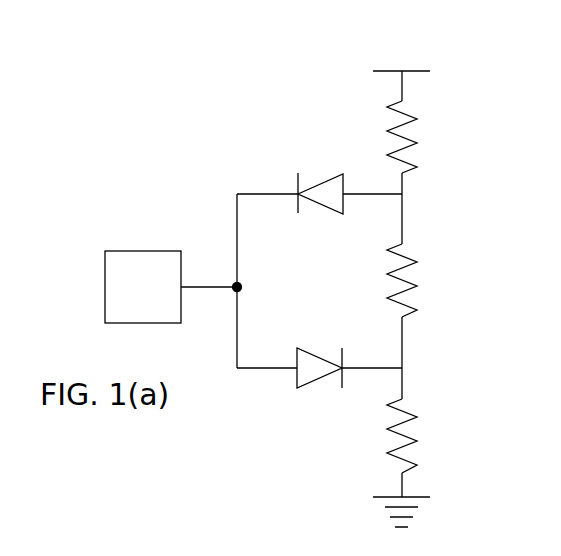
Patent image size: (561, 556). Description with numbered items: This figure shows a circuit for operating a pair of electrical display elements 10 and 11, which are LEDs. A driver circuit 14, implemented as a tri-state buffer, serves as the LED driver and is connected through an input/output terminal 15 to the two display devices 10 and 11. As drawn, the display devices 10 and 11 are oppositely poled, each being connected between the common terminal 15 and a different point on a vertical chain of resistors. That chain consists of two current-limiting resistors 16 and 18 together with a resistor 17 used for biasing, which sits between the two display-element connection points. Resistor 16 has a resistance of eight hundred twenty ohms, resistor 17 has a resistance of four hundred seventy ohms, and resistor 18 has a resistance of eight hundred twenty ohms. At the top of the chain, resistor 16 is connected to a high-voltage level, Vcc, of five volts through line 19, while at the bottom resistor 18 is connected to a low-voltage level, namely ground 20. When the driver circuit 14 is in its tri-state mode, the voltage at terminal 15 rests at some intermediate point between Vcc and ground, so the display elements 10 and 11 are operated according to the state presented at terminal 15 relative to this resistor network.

The electrical display element 10 is at (320, 175).
The electrical display element 11 is at (318, 350).
The driver circuit 14 is at (140, 247).
The input/output terminal 15 is at (234, 278).
The current-limiting resistor 16 is at (418, 140).
The biasing resistor 17 is at (420, 287).
The current-limiting resistor 18 is at (413, 440).
The line 19 is at (408, 68).
The ground 20 is at (420, 519).